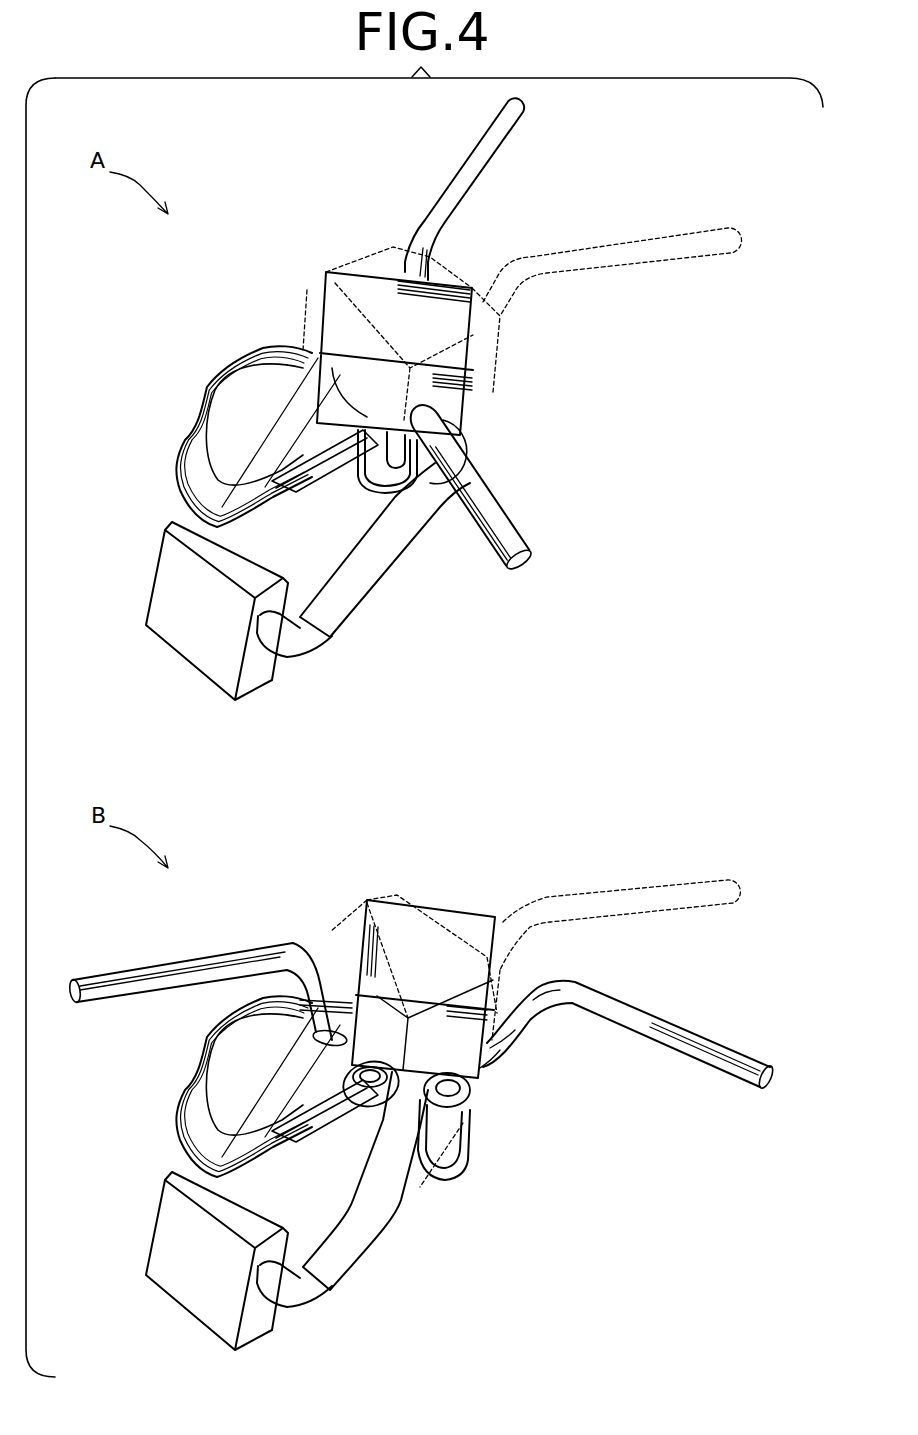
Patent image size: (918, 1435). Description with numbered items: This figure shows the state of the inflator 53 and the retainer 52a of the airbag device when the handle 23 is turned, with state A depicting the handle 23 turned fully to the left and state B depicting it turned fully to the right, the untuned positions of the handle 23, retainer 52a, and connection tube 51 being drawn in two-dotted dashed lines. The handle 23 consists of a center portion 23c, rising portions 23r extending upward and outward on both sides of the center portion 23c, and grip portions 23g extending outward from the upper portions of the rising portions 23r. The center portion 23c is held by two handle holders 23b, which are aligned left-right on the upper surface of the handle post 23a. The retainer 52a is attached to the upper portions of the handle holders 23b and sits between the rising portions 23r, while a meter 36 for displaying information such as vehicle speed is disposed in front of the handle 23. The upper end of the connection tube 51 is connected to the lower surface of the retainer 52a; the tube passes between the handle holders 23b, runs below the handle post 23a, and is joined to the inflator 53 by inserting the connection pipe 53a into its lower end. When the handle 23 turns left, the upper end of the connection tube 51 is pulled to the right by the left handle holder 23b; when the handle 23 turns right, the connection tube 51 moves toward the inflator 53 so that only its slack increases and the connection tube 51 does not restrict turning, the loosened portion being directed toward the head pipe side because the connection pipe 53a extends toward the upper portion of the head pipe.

The handle 23 is at (507, 478).
The handle post 23a is at (368, 487).
The handle holders 23b is at (470, 1093).
The center portion 23c is at (500, 1062).
The grip portions 23g is at (503, 523).
The rising portions 23r is at (300, 998).
The meter 36 is at (230, 410).
The connection tube 51 is at (350, 593).
The retainer 52a is at (353, 288).
The inflator 53 is at (187, 635).
The connection pipe 53a is at (292, 640).